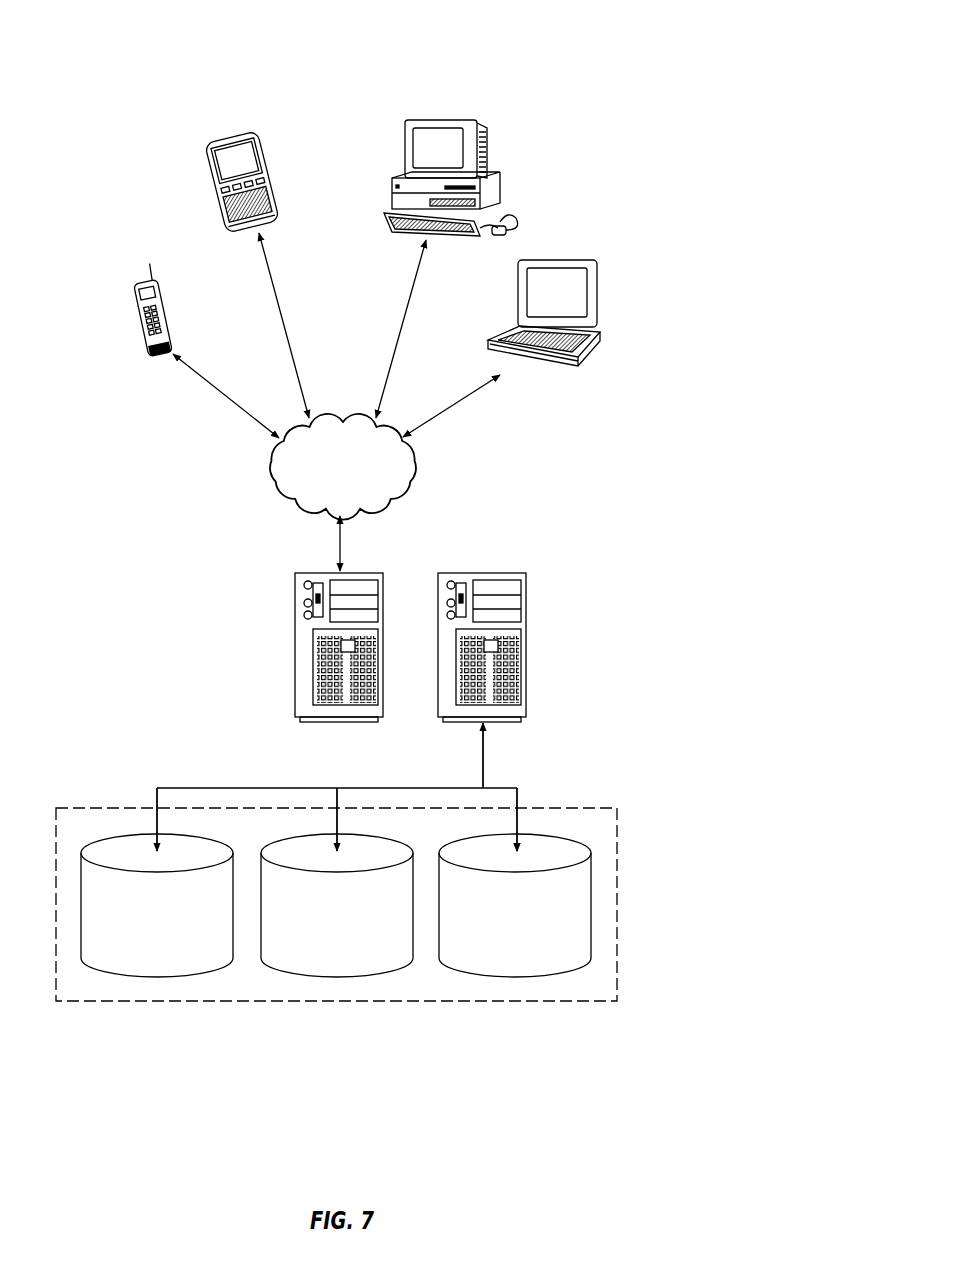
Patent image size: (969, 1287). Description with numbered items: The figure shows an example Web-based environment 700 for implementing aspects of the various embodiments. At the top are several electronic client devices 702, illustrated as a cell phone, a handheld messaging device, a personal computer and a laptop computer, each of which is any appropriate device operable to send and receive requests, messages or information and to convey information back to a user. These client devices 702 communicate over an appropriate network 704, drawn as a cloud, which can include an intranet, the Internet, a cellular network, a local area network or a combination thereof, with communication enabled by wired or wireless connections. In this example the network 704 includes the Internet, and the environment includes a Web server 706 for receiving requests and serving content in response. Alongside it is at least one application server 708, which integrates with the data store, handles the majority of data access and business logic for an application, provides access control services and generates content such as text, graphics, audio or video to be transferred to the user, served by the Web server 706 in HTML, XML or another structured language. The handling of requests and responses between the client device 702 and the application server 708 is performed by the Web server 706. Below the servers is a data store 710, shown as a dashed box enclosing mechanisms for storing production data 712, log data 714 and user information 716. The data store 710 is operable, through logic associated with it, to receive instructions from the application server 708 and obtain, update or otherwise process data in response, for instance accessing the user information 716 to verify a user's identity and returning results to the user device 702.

The environment 700 is at (576, 30).
The electronic client device 702 is at (393, 130).
The network 704 is at (268, 502).
The Web server 706 is at (295, 647).
The application server 708 is at (527, 647).
The data store 710 is at (131, 808).
The production data 712 is at (157, 905).
The log data 714 is at (337, 905).
The user information 716 is at (515, 905).